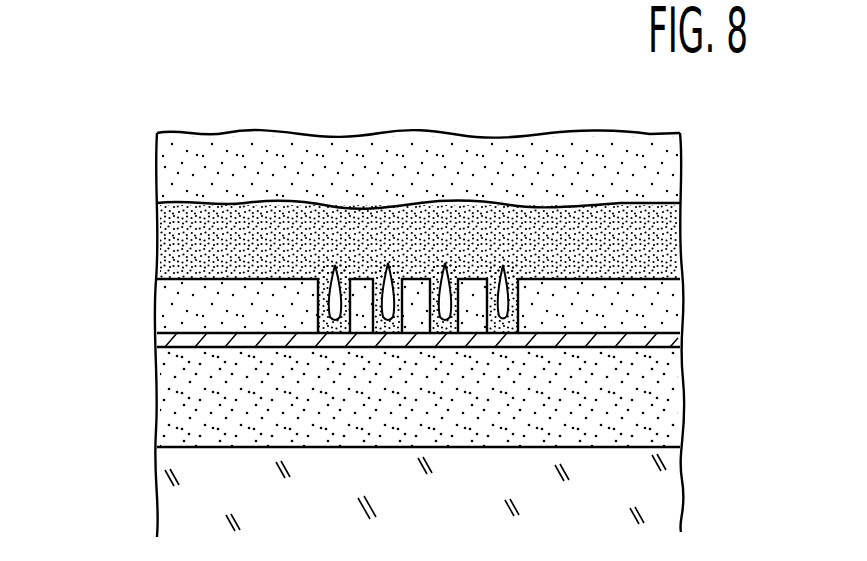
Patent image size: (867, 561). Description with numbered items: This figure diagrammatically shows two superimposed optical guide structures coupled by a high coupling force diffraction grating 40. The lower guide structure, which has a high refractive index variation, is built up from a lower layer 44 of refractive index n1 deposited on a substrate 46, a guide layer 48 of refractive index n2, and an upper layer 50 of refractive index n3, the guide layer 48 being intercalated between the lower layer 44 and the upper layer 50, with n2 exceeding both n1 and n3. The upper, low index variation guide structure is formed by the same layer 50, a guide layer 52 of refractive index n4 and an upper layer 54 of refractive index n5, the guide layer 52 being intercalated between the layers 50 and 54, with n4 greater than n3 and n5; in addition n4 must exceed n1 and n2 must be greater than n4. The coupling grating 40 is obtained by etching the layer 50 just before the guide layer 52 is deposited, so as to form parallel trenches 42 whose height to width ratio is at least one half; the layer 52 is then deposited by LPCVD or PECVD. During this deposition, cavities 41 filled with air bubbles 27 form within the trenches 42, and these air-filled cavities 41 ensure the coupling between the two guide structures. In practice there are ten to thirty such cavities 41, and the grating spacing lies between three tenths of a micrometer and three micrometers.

The upper layer 54 is at (177, 158).
The guide layer 52 is at (190, 232).
The upper layer 50 is at (190, 300).
The guide layer 48 is at (170, 338).
The lower layer 44 is at (185, 402).
The substrate 46 is at (205, 497).
The trenches 42 is at (332, 278).
The air bubbles 27 is at (502, 283).
The diffraction grating 40 is at (522, 307).
The cavities 41 is at (448, 335).